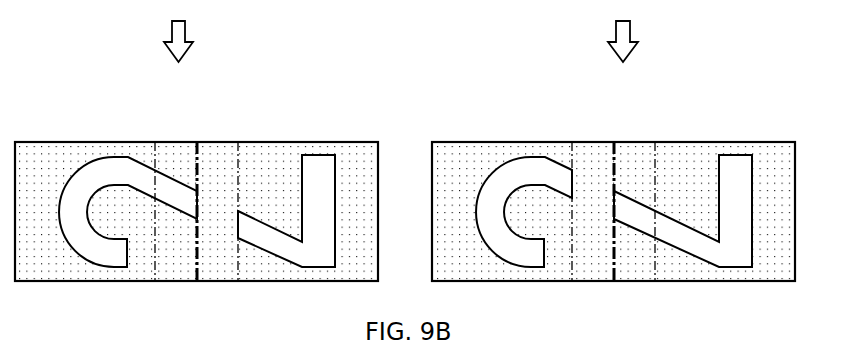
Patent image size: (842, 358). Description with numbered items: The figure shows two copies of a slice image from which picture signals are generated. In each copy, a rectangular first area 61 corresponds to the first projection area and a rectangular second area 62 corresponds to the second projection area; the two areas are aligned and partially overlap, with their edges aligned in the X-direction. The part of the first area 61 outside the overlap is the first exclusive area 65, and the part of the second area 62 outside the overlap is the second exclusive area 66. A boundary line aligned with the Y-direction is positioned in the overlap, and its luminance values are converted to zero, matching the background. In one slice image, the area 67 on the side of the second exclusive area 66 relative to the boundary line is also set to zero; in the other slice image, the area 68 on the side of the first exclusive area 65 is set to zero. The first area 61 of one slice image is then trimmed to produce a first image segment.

The first area 61 is at (238, 135).
The second area 62 is at (795, 135).
The first exclusive area 65 is at (15, 283).
The second exclusive area 66 is at (655, 283).
The area opposite to the first exclusive area 67 is at (197, 283).
The area opposite to the second exclusive area 68 is at (572, 283).